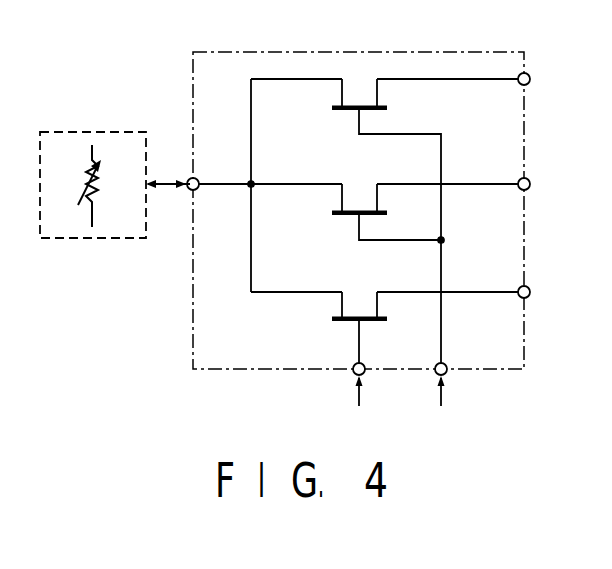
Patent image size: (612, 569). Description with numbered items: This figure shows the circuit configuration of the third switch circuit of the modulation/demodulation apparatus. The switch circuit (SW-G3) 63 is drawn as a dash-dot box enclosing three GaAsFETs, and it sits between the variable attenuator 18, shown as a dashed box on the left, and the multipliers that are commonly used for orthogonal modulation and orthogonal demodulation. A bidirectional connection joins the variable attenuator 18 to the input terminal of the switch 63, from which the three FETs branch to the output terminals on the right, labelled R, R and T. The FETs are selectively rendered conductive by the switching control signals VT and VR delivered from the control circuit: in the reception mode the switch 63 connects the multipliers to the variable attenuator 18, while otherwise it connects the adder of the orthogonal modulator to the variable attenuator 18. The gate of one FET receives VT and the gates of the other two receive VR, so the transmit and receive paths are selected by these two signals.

The variable attenuator 18 is at (107, 132).
The switch circuit 63 is at (446, 51).
The switch circuit SW-G3 is at (374, 34).
The R terminal R is at (534, 132).
The T terminal T is at (534, 293).
The switching control signal VT is at (359, 400).
The switching control signal VR is at (440, 400).